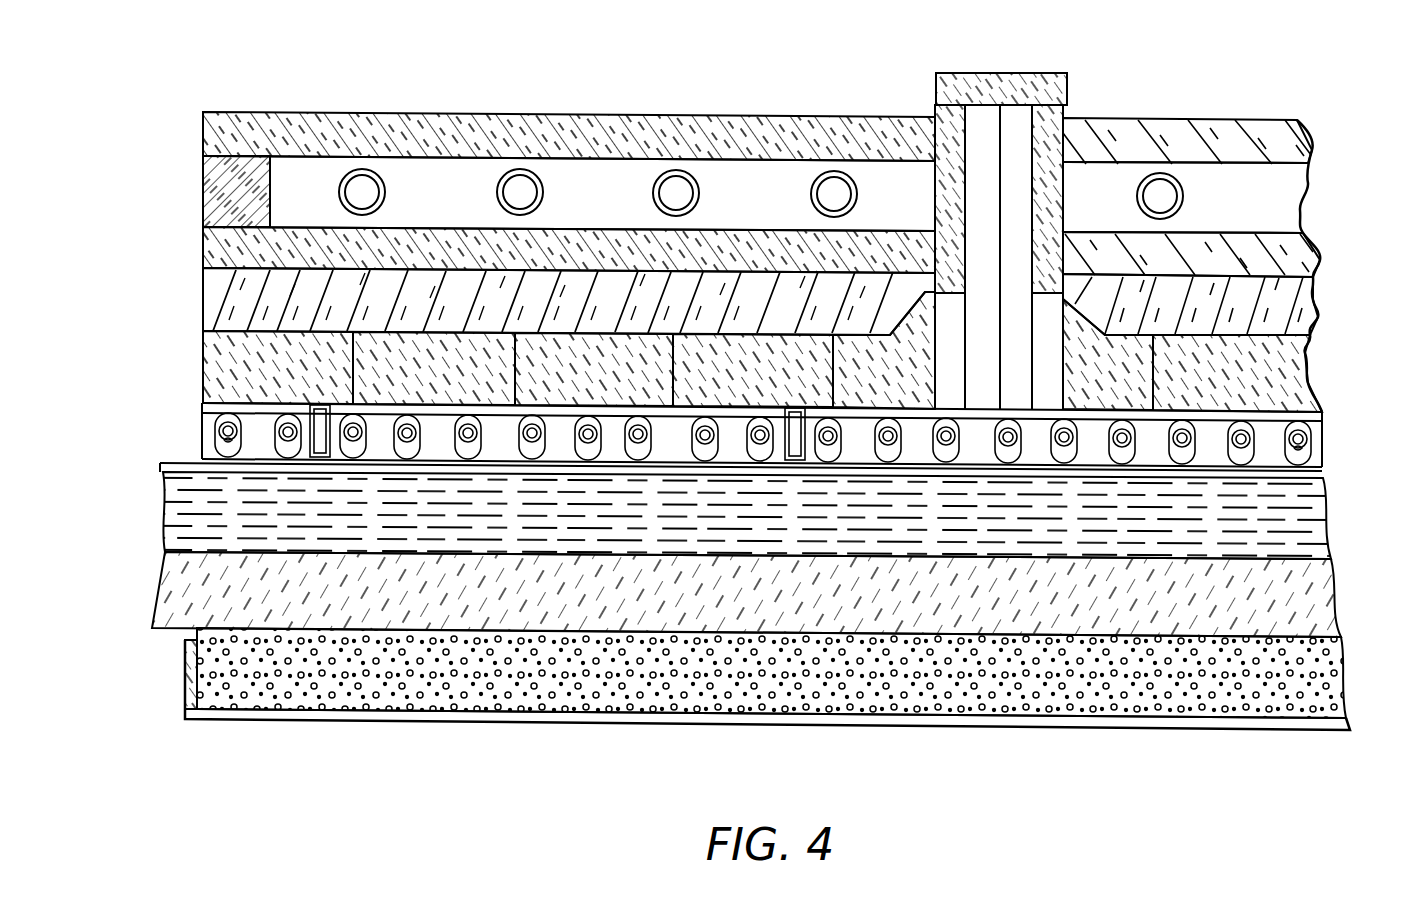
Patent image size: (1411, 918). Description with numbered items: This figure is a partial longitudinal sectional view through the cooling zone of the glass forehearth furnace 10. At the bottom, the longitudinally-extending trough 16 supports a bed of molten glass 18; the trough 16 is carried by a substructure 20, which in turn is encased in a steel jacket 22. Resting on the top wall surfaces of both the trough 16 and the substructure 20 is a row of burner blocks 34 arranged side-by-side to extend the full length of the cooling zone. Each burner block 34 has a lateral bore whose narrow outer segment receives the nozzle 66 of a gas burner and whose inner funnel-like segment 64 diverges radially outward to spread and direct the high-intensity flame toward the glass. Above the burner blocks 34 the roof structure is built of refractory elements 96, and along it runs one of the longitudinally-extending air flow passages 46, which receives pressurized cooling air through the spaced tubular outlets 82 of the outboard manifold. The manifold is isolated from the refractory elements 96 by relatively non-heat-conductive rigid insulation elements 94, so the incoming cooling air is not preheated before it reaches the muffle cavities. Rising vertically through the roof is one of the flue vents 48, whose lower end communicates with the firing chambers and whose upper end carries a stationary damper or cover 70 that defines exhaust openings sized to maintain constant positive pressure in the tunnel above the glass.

The glass forehearth furnace 10 is at (536, 738).
The trough 16 is at (690, 612).
The molten glass 18 is at (710, 541).
The substructure 20 is at (698, 697).
The steel jacket 22 is at (1104, 720).
The burner blocks 34 is at (201, 418).
The air flow passages 46 is at (446, 180).
The flue vents 48 is at (984, 208).
The funnel-like bore segment 64 is at (163, 462).
The nozzle 66 is at (890, 452).
The damper or cover 70 is at (984, 72).
The tubular outlets 82 is at (523, 165).
The rigid insulation elements 94 is at (575, 262).
The refractory elements 96 is at (755, 316).